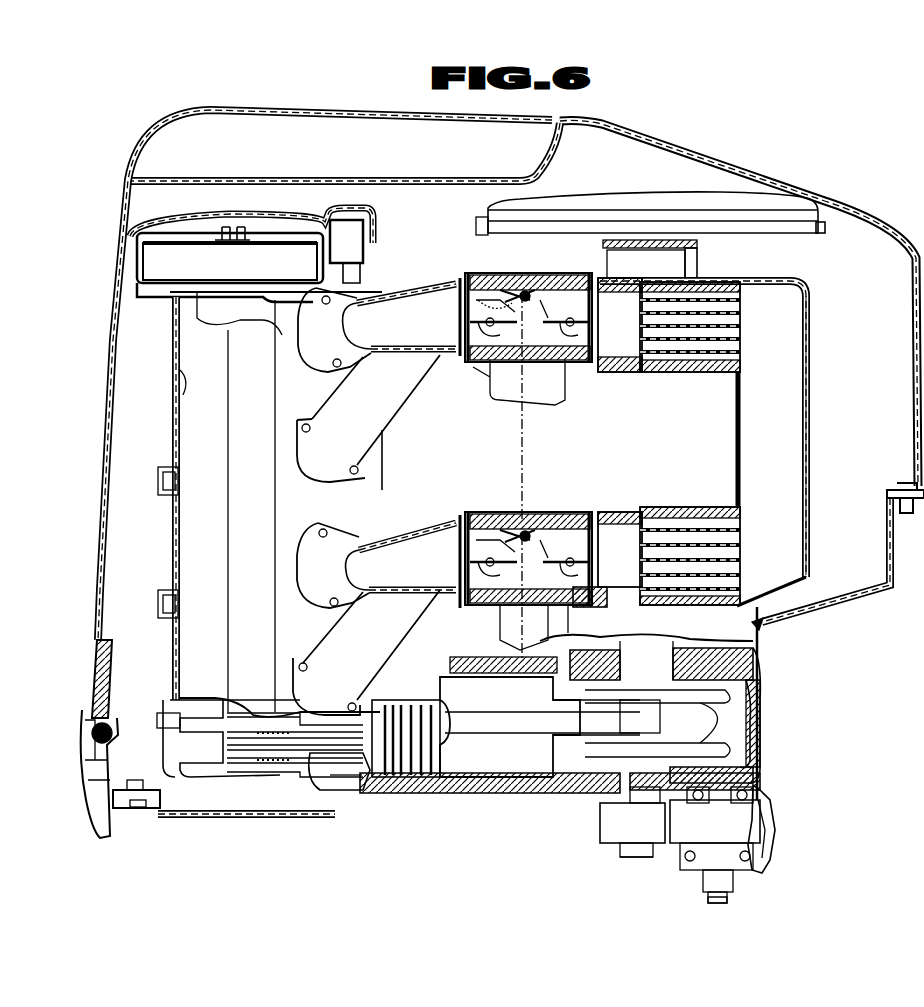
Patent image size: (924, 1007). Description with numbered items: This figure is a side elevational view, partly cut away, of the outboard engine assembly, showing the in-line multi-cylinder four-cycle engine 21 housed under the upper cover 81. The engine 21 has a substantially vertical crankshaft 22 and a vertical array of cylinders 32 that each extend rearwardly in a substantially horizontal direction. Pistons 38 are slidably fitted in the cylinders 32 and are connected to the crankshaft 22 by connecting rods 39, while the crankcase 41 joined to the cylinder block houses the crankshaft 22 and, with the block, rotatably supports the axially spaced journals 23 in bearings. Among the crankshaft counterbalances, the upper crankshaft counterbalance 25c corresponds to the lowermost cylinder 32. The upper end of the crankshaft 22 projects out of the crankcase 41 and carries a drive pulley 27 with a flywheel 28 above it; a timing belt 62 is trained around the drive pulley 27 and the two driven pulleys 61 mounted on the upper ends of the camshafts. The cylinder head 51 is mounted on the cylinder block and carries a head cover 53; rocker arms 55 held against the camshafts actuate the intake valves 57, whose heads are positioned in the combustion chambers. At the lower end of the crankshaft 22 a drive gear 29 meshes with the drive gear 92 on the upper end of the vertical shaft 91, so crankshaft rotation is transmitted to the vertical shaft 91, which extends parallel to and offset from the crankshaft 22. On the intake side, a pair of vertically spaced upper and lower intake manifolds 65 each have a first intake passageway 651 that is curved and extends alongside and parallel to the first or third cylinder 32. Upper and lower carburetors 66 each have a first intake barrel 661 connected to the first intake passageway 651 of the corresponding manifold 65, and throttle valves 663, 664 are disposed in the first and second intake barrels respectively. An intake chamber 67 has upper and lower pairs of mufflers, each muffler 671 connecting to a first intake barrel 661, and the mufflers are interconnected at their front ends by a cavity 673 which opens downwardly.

The engine 21 is at (484, 474).
The crankshaft 22 is at (643, 866).
The journals 23 is at (637, 790).
The upper crankshaft counterbalance 25c is at (700, 719).
The drive pulley 27 is at (676, 262).
The flywheel 28 is at (712, 196).
The drive gear 29 is at (598, 830).
The cylinders 32 is at (495, 786).
The pistons 38 is at (404, 794).
The connecting rods 39 is at (468, 728).
The crankcase 41 is at (684, 708).
The cylinder head 51 is at (248, 504).
The head cover 53 is at (172, 525).
The rocker arms 55 is at (240, 782).
The intake valves 57 is at (347, 798).
The driven pulleys 61 is at (157, 260).
The timing belt 62 is at (485, 270).
The intake manifolds 65 is at (379, 458).
The first intake passageway 651 is at (455, 330).
The carburetors 66 is at (517, 430).
The first intake barrel 661 is at (545, 367).
The throttle valve 663 is at (480, 372).
The throttle valve 664 is at (600, 376).
The intake chamber 67 is at (728, 458).
The muffler 671 is at (697, 355).
The cavity 673 is at (782, 448).
The upper cover 81 is at (106, 440).
The vertical shaft 91 is at (722, 899).
The drive gear 92 is at (775, 824).